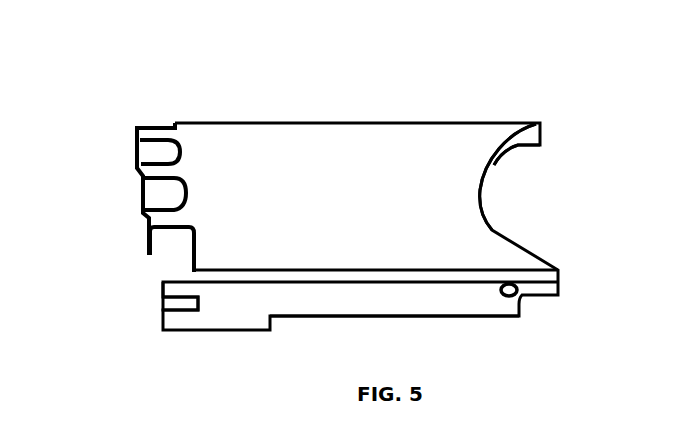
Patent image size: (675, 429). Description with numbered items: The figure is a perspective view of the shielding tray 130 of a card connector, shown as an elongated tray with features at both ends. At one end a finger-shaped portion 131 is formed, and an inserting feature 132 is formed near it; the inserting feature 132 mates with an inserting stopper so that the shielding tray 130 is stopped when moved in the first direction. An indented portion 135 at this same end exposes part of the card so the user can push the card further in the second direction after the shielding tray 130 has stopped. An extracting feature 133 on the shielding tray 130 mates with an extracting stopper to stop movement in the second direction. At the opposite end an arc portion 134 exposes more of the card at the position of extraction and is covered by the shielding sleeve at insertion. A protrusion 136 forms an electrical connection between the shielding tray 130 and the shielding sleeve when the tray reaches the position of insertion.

The shielding tray 130 is at (184, 79).
The finger-shaped portion 131 is at (134, 150).
The inserting feature 132 is at (188, 309).
The extracting feature 133 is at (512, 308).
The arc portion 134 is at (482, 194).
The indented portion 135 is at (192, 268).
The protrusion 136 is at (514, 293).